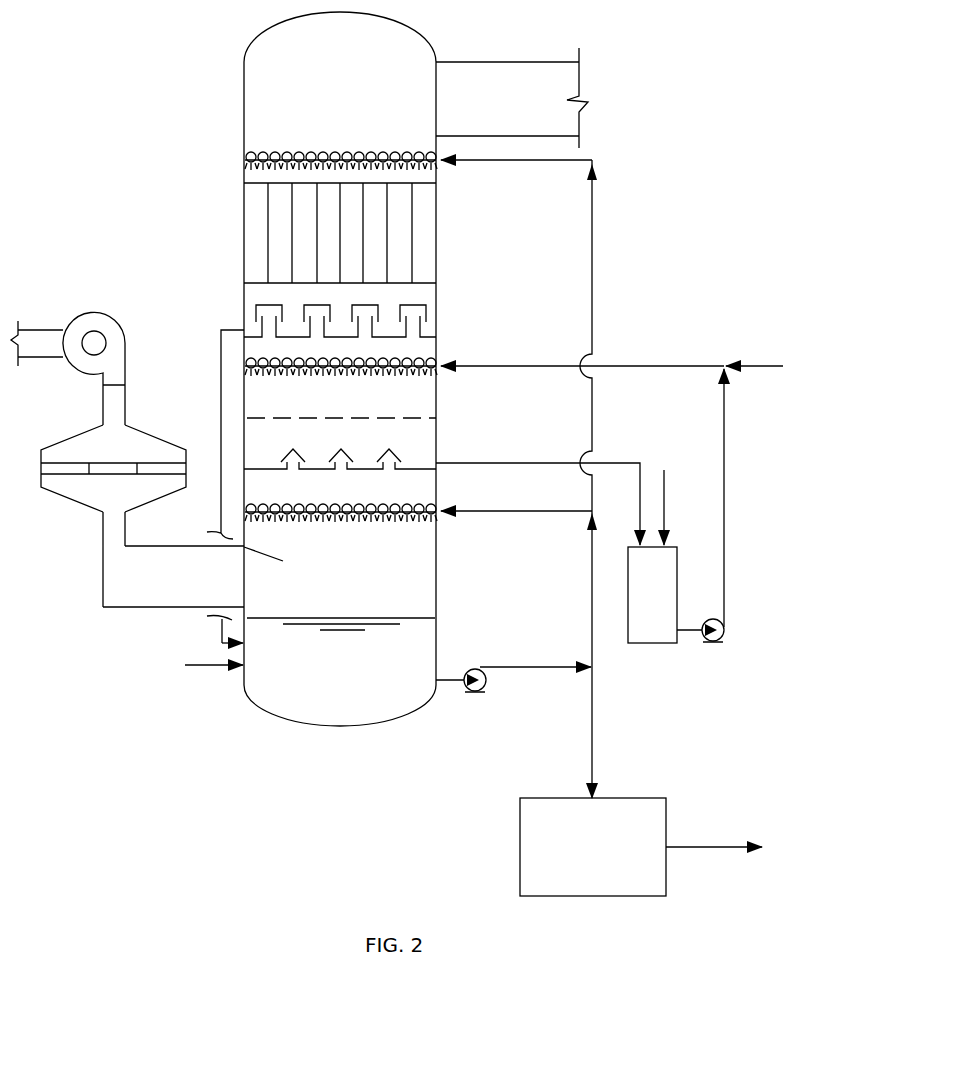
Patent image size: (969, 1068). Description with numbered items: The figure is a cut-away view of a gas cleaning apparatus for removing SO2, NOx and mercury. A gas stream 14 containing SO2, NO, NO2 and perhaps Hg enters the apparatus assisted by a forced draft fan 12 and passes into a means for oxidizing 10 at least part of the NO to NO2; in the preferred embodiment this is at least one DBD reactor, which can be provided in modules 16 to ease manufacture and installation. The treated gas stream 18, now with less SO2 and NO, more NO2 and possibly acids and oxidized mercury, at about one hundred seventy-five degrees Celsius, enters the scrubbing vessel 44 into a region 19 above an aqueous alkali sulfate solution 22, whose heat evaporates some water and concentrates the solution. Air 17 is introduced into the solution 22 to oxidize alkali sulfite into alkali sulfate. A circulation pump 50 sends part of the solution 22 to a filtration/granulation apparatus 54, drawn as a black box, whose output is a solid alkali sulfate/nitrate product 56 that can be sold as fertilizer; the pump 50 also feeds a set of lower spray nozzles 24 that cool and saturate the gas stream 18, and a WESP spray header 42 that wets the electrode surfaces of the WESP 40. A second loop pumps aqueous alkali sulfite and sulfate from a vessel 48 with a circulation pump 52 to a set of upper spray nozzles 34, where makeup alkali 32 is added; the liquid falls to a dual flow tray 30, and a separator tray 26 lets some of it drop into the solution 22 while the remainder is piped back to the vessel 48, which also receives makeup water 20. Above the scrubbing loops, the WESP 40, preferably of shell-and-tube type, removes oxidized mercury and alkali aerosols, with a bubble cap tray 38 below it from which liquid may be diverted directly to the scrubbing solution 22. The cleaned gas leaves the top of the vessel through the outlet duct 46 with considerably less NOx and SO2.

The means for oxidizing 10 is at (60, 422).
The forced draft fan 12 is at (110, 330).
The gas stream 14 is at (35, 338).
The modules 16 is at (123, 470).
The air 17 is at (196, 647).
The gas stream 18 is at (201, 591).
The region 19 is at (360, 590).
The makeup water 20 is at (665, 492).
The aqueous alkali sulfate solution 22 is at (353, 685).
The lower spray nozzles 24 is at (247, 513).
The separator tray 26 is at (397, 460).
The dual flow tray 30 is at (377, 416).
The makeup alkali 32 is at (629, 366).
The upper spray nozzles 34 is at (245, 366).
The bubble cap tray 38 is at (421, 307).
The WESP 40 is at (425, 240).
The WESP spray header 42 is at (248, 155).
The scrubbing vessel 44 is at (243, 72).
The gas outlet duct 46 is at (530, 112).
The vessel 48 is at (665, 607).
The circulation pump 50 is at (462, 688).
The circulation pump 52 is at (725, 638).
The filtration/granulation apparatus 54 is at (605, 860).
The solid alkali sulfate/nitrate product 56 is at (738, 848).